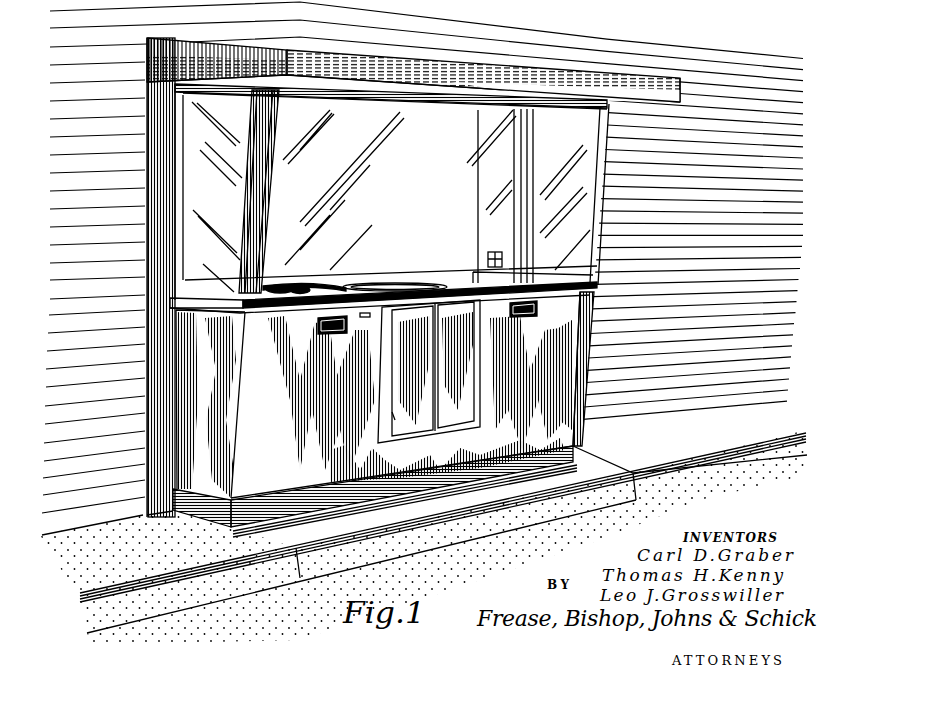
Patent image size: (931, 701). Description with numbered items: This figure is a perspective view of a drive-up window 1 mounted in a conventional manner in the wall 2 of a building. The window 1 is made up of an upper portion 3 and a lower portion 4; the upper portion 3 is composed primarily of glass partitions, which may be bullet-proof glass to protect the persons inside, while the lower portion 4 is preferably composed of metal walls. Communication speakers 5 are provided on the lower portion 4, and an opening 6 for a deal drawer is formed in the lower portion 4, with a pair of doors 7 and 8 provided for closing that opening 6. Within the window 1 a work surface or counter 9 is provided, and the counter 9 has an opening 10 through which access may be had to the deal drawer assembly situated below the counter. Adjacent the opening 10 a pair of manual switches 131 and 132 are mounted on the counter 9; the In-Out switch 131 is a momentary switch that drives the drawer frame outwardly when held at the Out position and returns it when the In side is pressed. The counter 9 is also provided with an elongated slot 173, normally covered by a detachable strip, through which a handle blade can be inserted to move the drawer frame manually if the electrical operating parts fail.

The drive-up window 1 is at (205, 532).
The wall 2 is at (96, 516).
The upper portion 3 is at (393, 191).
The lower portion 4 is at (304, 414).
The communication speakers 5 is at (320, 334).
The opening 6 is at (392, 415).
The door 7 is at (429, 371).
The door 8 is at (454, 366).
The counter 9 is at (410, 273).
The opening 10 is at (380, 283).
The In-Out switch 131 is at (284, 286).
The manual switch 132 is at (293, 288).
The elongated slot 173 is at (304, 289).